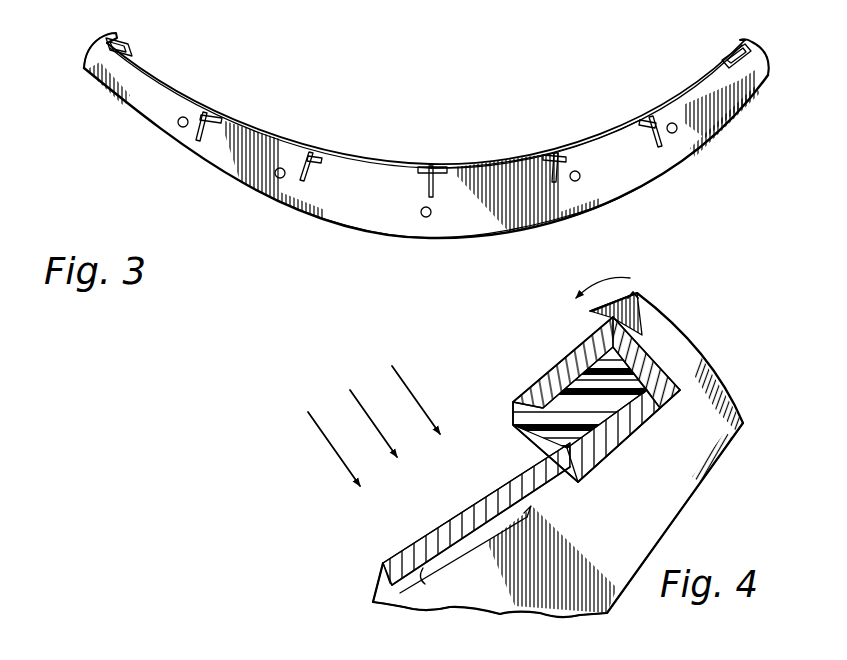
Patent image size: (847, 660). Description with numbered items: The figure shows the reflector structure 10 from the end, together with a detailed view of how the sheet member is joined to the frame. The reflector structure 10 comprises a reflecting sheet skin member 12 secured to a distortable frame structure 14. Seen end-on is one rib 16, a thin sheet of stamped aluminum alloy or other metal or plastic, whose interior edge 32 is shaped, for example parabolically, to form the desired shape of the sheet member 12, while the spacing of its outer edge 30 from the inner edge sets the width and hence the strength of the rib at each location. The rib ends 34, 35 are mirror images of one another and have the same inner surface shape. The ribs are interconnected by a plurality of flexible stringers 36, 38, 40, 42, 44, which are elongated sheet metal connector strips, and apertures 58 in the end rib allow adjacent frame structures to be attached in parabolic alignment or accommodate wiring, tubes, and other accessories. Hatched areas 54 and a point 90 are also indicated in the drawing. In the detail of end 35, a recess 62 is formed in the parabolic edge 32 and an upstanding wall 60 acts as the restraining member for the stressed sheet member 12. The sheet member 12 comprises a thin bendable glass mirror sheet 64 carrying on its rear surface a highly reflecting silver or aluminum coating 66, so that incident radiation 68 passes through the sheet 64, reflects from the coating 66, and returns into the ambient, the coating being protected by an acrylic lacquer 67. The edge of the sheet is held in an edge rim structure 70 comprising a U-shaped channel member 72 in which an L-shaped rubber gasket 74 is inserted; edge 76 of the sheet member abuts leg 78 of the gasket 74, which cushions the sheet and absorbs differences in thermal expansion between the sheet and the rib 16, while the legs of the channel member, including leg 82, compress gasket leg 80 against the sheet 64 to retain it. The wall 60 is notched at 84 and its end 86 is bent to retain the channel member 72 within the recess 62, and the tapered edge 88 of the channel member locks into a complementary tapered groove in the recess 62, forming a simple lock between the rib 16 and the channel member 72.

In FIG. 3, the reflector structure 10 is at (379, 96).
In FIG. 3, the reflecting sheet skin member 12 is at (341, 155).
In FIG. 4, the reflecting sheet skin member 12 is at (411, 534).
In FIG. 3, the frame structure 14 is at (218, 197).
In FIG. 3, the rib 16 is at (574, 200).
In FIG. 4, the rib 16 is at (680, 497).
In FIG. 3, the outer edge 30 is at (337, 226).
In FIG. 3, the interior edge 32 is at (522, 167).
In FIG. 4, the interior edge 32 is at (379, 594).
In FIG. 3, the rib end 34 is at (82, 67).
In FIG. 3, the rib end 35 is at (756, 41).
In FIG. 4, the rib end 35 is at (713, 352).
In FIG. 3, the stringer 36 is at (199, 119).
In FIG. 3, the stringer 38 is at (297, 152).
In FIG. 3, the stringer 40 is at (412, 166).
In FIG. 3, the stringer 42 is at (545, 153).
In FIG. 3, the stringer 44 is at (631, 121).
In FIG. 3, the slots 54 is at (236, 130).
In FIG. 3, the apertures 58 is at (177, 129).
In FIG. 4, the upstanding wall 60 is at (667, 333).
In FIG. 4, the recess 62 is at (562, 478).
In FIG. 4, the mirror sheet 64 is at (491, 500).
In FIG. 4, the reflecting coating 66 is at (423, 568).
In FIG. 4, the acrylic lacquer 67 is at (412, 580).
In FIG. 4, the incident radiation 68 is at (425, 406).
In FIG. 4, the edge rim structure 70 is at (557, 363).
In FIG. 4, the U-shaped channel member 72 is at (622, 427).
In FIG. 4, the L-shaped rubber gasket 74 is at (520, 446).
In FIG. 4, the edge of sheet member 76 is at (600, 450).
In FIG. 4, the gasket leg 78 is at (655, 393).
In FIG. 4, the gasket leg 80 is at (548, 403).
In FIG. 4, the channel member leg 82 is at (581, 358).
In FIG. 4, the notch 84 is at (637, 295).
In FIG. 4, the wall end 86 is at (620, 294).
In FIG. 4, the channel member edge 88 is at (499, 541).
In FIG. 4, the ledge end 90 is at (538, 506).